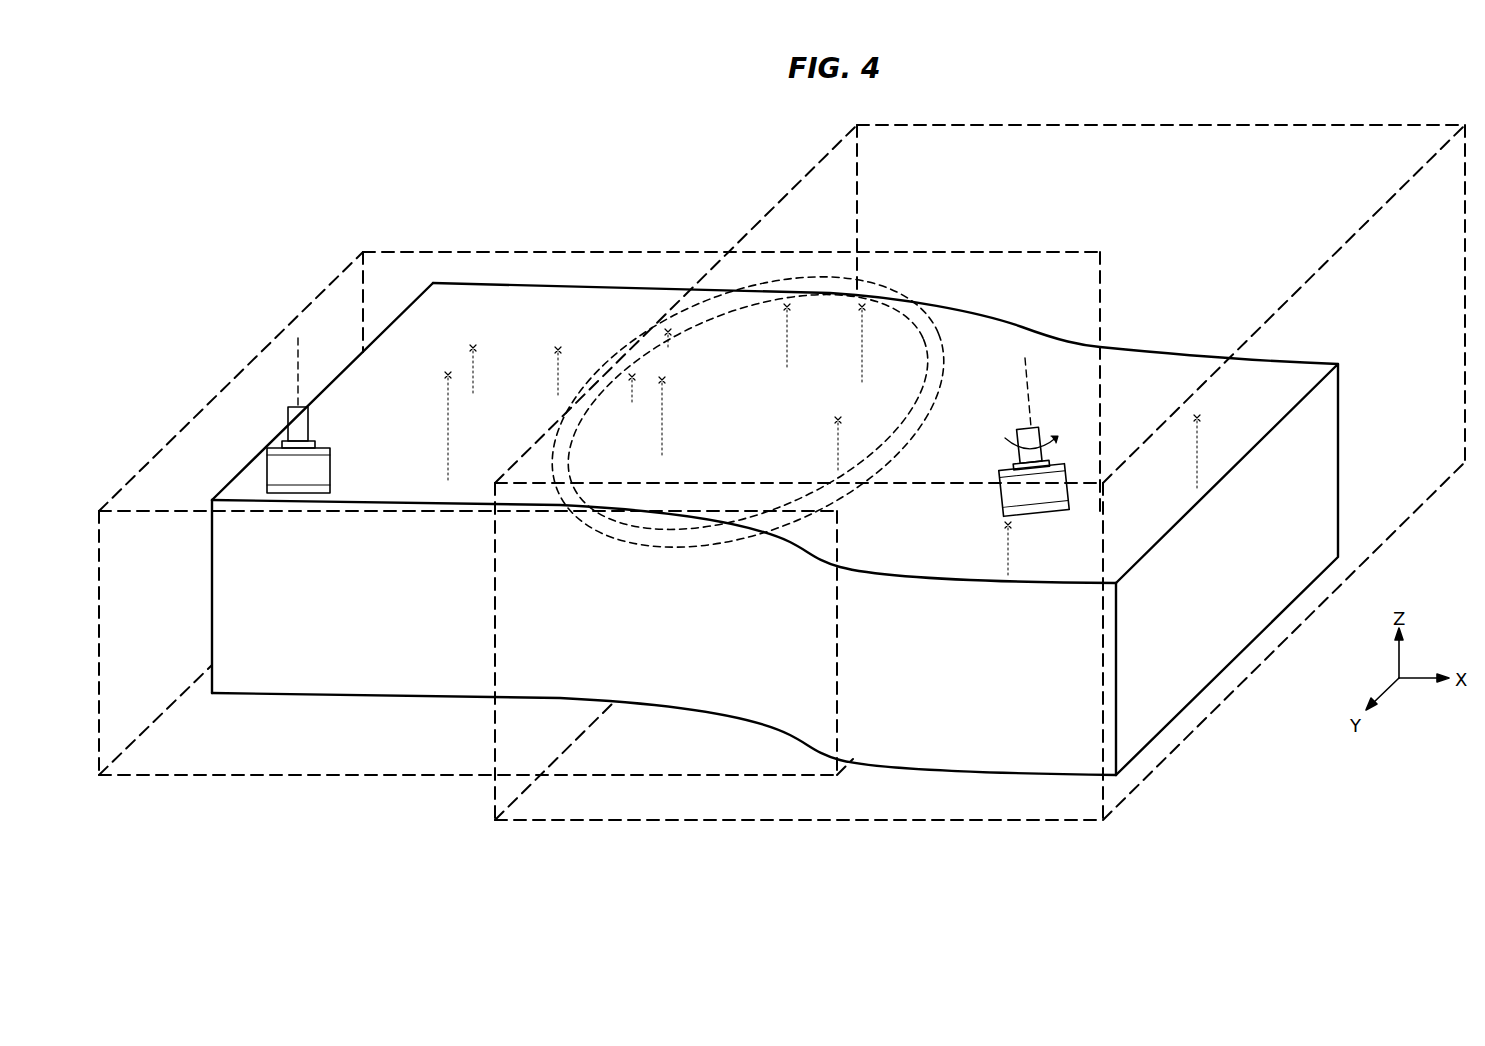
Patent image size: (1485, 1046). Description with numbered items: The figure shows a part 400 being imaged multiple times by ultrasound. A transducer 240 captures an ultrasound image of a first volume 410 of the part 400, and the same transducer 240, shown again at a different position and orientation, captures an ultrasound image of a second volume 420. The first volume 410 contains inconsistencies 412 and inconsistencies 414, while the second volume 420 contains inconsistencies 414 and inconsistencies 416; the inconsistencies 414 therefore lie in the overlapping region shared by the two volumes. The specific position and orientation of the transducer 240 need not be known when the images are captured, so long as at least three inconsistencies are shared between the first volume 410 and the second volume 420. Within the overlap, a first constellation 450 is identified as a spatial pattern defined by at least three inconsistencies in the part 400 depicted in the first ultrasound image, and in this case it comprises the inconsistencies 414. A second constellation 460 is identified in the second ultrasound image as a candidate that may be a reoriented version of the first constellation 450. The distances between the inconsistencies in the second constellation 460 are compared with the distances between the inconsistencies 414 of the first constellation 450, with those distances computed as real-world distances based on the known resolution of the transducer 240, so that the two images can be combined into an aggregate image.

The part 400 is at (1330, 405).
The first volume 410 is at (295, 776).
The second volume 420 is at (733, 822).
The inconsistencies 412 is at (475, 394).
The inconsistencies 414 is at (670, 352).
The inconsistencies 416 is at (1196, 488).
The transducer 240 is at (331, 466).
The first constellation 450 is at (927, 379).
The second constellation 460 is at (833, 272).